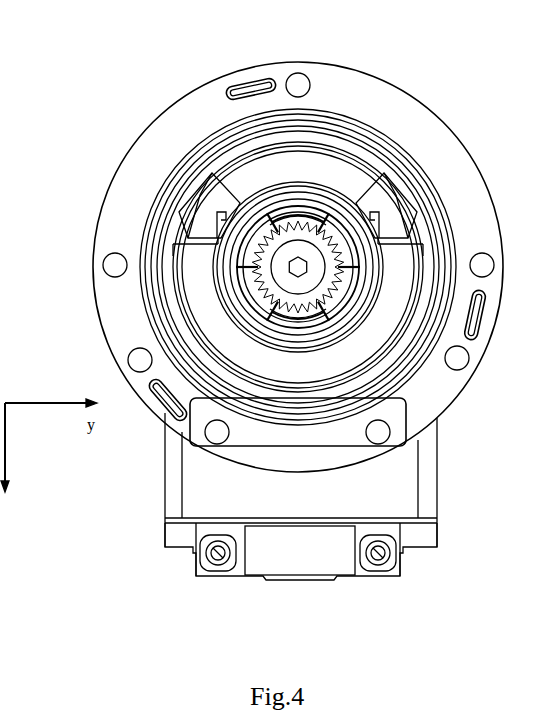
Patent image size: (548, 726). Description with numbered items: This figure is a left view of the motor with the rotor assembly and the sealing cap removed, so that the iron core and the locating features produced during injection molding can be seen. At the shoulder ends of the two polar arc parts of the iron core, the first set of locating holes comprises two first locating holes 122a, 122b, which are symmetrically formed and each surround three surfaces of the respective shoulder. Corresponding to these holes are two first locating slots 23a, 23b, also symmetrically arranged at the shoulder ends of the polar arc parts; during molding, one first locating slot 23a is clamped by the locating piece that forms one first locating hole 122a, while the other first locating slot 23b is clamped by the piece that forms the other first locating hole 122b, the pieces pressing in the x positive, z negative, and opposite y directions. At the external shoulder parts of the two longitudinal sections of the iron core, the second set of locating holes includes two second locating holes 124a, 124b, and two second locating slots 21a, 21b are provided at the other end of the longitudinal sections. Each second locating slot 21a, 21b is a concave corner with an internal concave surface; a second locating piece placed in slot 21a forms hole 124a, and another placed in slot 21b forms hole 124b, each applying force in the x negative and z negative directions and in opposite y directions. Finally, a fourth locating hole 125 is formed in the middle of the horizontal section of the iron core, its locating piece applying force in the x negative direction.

The first locating slot 23a is at (212, 173).
The first locating slot 23b is at (368, 210).
The first locating hole 122a is at (200, 220).
The first locating hole 122b is at (403, 210).
The second locating hole 124a is at (200, 563).
The second locating hole 124b is at (395, 563).
The second locating slot 21a is at (218, 558).
The second locating slot 21b is at (378, 558).
The fourth locating hole 125 is at (297, 577).